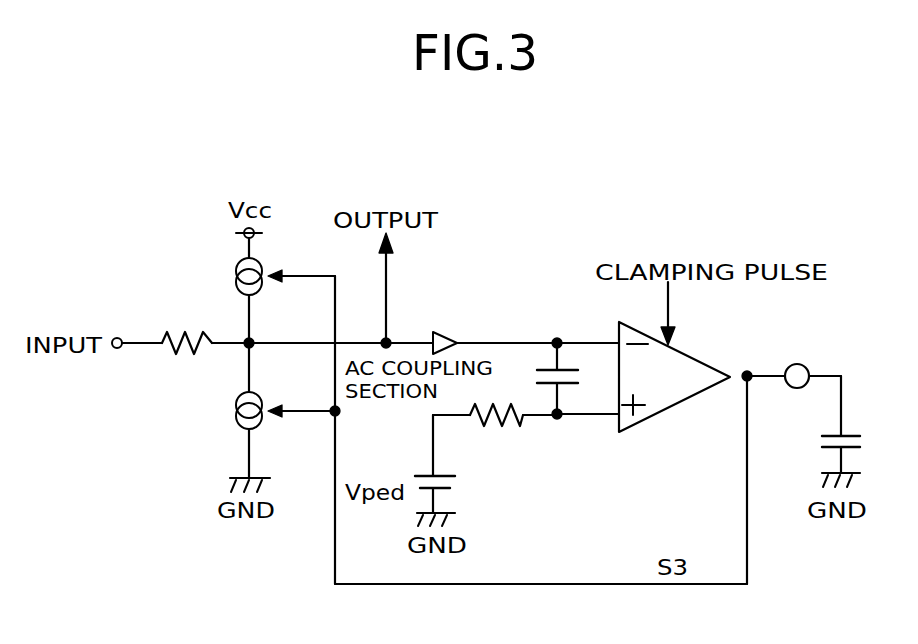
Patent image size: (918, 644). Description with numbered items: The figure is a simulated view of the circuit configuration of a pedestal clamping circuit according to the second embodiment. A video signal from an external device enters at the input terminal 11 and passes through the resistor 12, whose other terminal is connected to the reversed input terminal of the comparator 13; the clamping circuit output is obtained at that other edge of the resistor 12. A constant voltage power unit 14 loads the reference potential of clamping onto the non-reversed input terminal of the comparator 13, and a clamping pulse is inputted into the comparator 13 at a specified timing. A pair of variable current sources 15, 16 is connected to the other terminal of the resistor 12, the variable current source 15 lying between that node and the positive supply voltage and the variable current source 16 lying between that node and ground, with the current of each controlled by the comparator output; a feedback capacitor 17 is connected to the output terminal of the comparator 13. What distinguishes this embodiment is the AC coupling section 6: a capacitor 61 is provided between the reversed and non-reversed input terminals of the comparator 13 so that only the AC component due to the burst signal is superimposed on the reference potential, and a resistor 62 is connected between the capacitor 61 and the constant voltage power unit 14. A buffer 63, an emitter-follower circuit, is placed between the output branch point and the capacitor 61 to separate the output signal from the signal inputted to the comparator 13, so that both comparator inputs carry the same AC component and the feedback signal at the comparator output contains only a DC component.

The input terminal 11 is at (115, 339).
The resistor 12 is at (165, 357).
The comparator 13 is at (692, 362).
The constant voltage power unit 14 is at (458, 488).
The variable current source 15 is at (233, 282).
The variable current source 16 is at (230, 418).
The feedback capacitor 17 is at (817, 448).
The AC coupling section 6 is at (533, 374).
The capacitor 61 is at (530, 377).
The resistor 62 is at (510, 430).
The buffer 63 is at (448, 328).